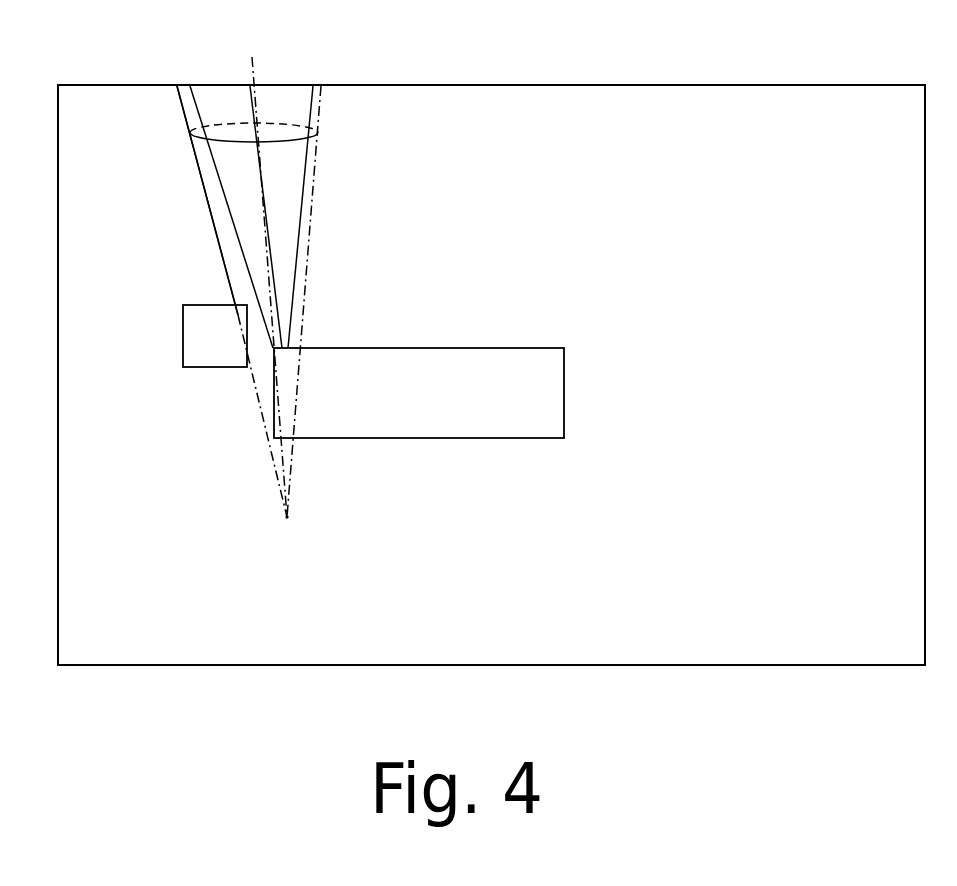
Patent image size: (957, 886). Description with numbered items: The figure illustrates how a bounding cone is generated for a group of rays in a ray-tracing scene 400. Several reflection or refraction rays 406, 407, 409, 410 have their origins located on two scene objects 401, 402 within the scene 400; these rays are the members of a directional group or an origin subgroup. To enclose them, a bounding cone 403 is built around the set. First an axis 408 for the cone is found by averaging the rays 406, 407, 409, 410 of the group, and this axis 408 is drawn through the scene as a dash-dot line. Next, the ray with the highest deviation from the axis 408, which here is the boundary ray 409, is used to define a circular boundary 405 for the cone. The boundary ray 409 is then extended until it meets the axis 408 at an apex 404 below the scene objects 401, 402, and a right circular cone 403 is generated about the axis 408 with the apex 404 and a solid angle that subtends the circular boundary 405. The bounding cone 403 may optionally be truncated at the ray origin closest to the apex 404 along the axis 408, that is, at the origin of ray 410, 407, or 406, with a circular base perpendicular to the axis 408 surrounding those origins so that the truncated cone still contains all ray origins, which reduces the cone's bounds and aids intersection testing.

The scene 400 is at (529, 146).
The scene object 401 is at (464, 405).
The scene object 402 is at (183, 330).
The bounding cone 403 is at (232, 403).
The apex 404 is at (287, 520).
The circular boundary 405 is at (190, 132).
The ray 406 is at (305, 177).
The ray 407 is at (263, 185).
The axis 408 is at (252, 63).
The boundary ray 409 is at (201, 178).
The ray 410 is at (232, 218).